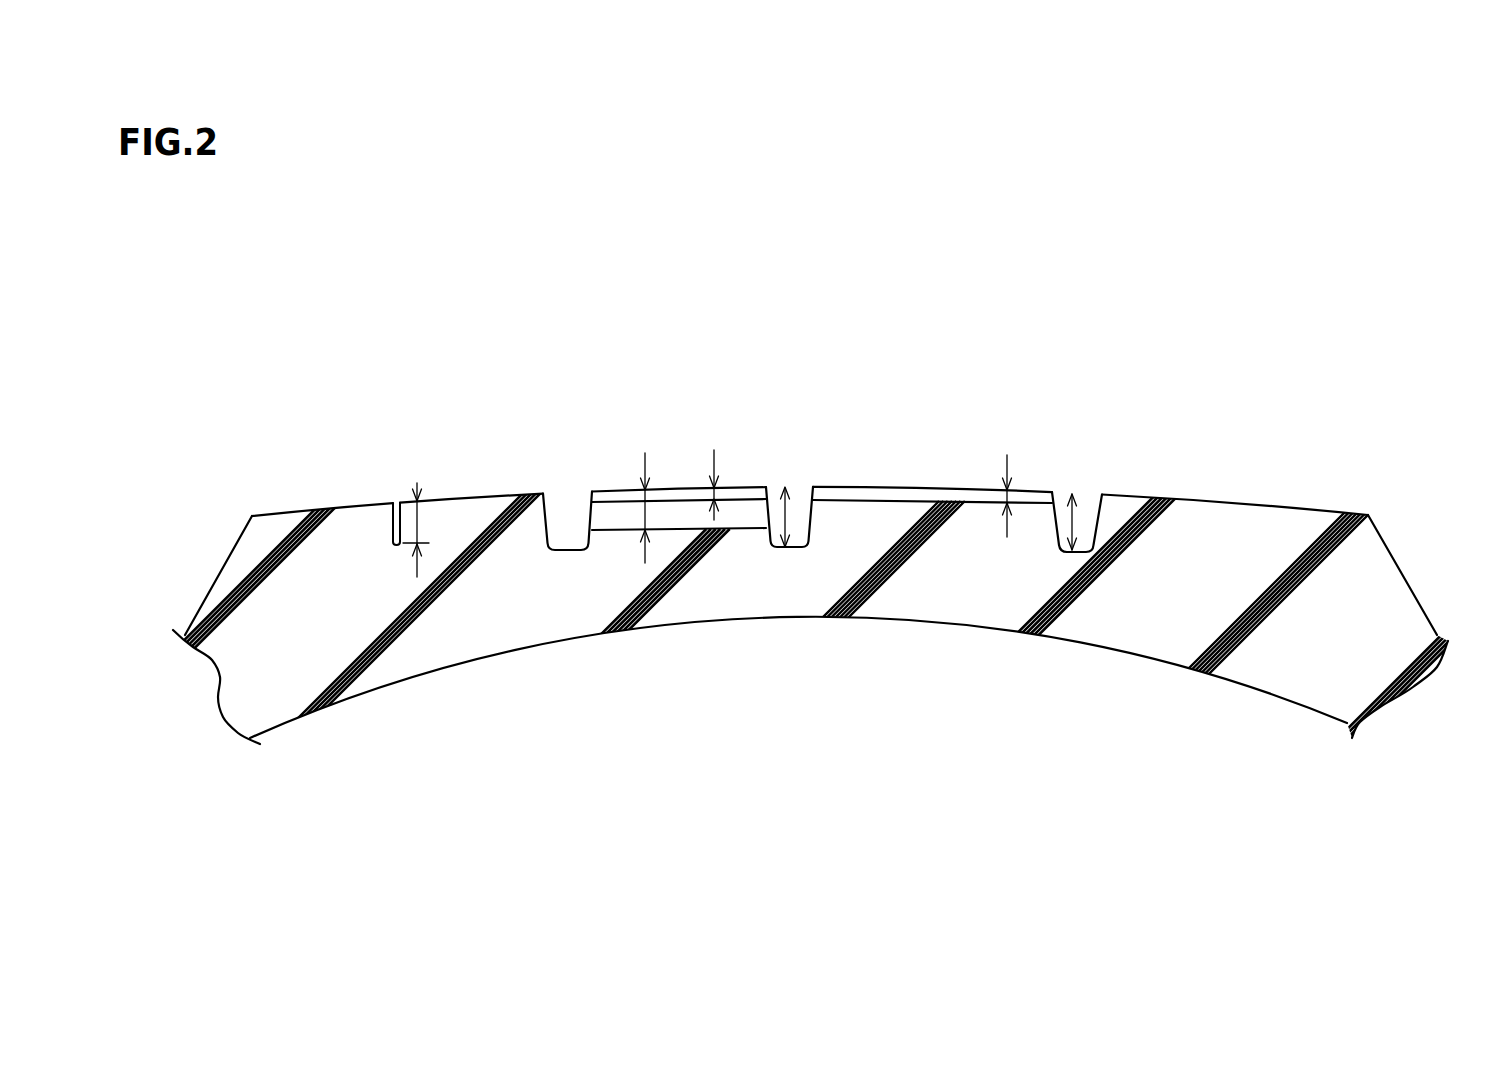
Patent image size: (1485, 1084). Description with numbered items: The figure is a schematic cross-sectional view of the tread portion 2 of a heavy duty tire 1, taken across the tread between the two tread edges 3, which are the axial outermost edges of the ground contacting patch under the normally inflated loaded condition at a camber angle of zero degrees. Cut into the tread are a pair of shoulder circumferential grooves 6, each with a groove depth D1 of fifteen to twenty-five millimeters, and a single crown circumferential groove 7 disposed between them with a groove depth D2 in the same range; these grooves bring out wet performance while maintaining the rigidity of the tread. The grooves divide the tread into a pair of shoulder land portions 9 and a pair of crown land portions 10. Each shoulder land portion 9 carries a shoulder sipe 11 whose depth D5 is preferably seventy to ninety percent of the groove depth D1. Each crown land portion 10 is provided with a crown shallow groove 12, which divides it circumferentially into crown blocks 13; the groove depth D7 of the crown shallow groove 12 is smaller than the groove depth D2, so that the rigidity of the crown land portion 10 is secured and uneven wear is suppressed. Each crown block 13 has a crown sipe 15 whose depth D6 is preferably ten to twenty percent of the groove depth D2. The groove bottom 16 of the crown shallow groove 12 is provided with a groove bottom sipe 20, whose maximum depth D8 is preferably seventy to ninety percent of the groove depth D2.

The heavy duty tire 1 is at (810, 528).
The tread portion 2 is at (754, 656).
The tread edge 3 is at (252, 516).
The shoulder circumferential groove 6 is at (826, 481).
The crown circumferential groove 7 is at (797, 473).
The shoulder land portion 9 is at (847, 437).
The crown land portion 10 is at (804, 427).
The shoulder sipe 11 is at (395, 502).
The crown shallow groove 12 is at (749, 487).
The crown block 13 is at (989, 429).
The crown sipe 15 is at (873, 488).
The groove bottom 16 is at (672, 500).
The groove bottom sipe 20 is at (615, 523).
The groove depth D1 is at (1073, 525).
The groove depth D2 is at (787, 517).
The depth D5 is at (418, 522).
The depth D6 is at (1000, 496).
The groove depth D7 is at (723, 497).
The maximum depth D8 is at (645, 518).